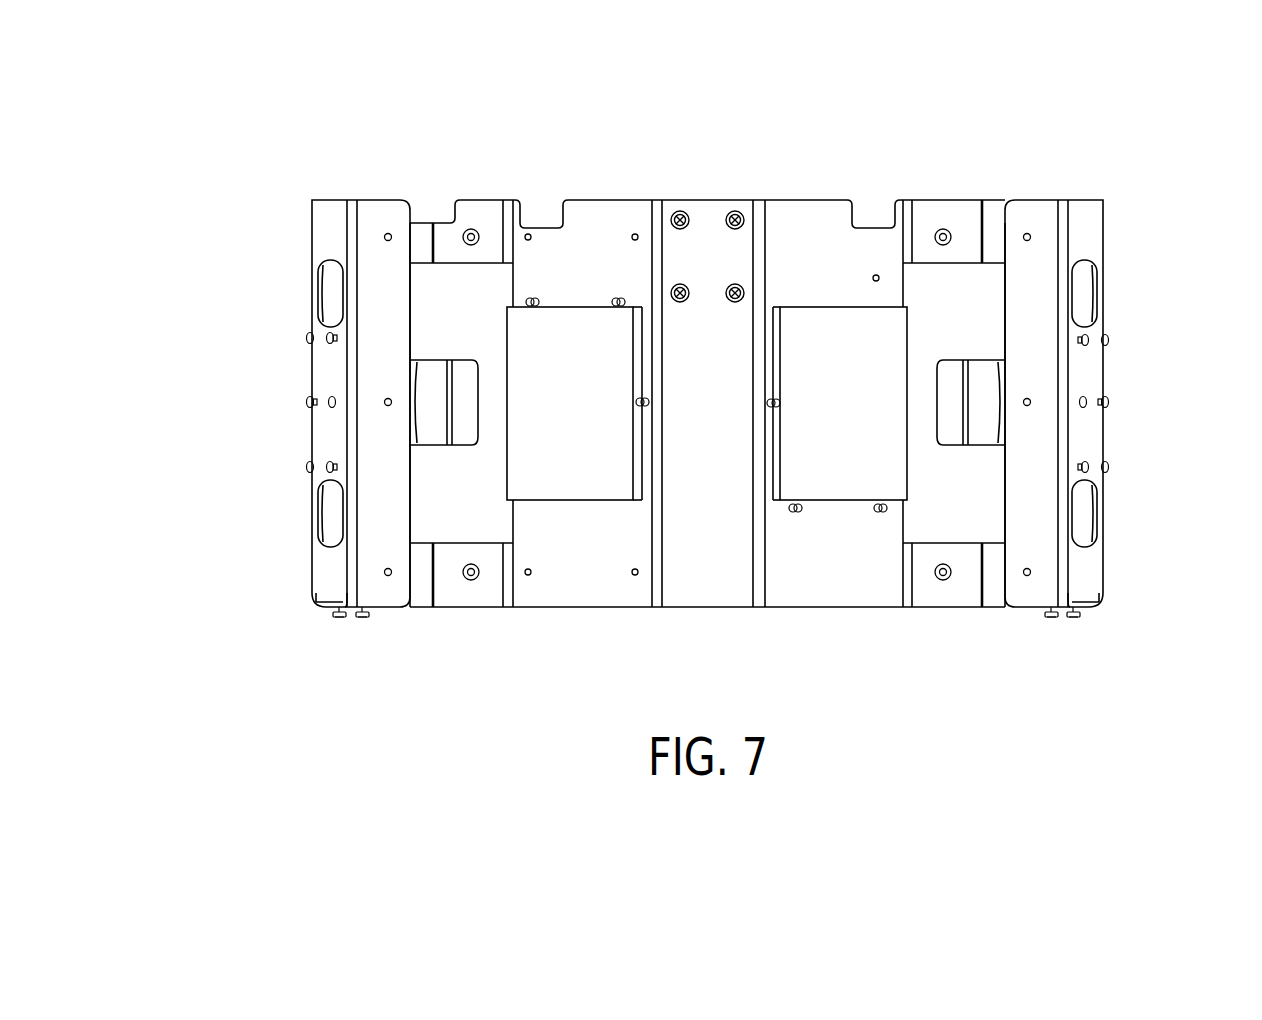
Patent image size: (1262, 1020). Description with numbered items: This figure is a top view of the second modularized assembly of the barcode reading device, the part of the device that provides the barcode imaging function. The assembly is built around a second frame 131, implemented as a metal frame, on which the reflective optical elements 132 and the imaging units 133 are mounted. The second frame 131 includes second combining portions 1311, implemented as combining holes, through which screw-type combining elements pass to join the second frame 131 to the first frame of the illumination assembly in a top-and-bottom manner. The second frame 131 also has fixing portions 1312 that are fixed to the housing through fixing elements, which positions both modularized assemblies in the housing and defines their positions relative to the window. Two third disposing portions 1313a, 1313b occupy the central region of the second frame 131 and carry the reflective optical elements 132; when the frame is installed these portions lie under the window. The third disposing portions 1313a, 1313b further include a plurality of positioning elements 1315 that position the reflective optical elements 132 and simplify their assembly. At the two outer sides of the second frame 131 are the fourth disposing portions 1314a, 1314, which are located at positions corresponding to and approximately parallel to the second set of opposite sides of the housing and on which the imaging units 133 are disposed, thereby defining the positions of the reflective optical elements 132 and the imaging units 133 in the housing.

The second frame 131 is at (312, 235).
The second combining portions 1311 is at (1030, 236).
The fixing portions 1312 is at (943, 580).
The third disposing portion 1313a is at (583, 525).
The third disposing portion 1313b is at (800, 245).
The fourth disposing portion 1314 is at (1083, 386).
The fourth disposing portion 1314a is at (328, 378).
The positioning elements 1315 is at (643, 398).
The reflective optical element 132 is at (527, 343).
The imaging unit 133 is at (427, 383).